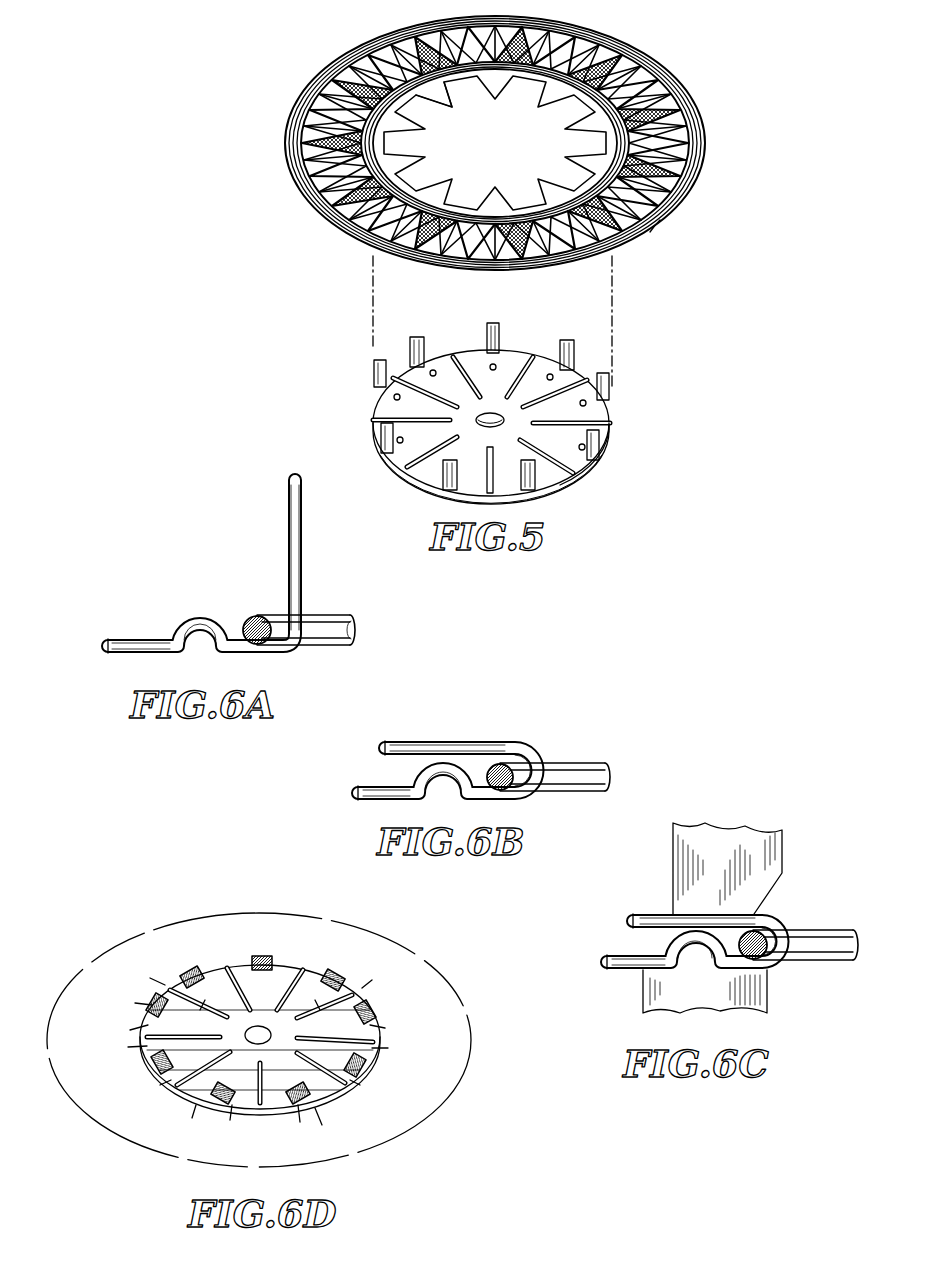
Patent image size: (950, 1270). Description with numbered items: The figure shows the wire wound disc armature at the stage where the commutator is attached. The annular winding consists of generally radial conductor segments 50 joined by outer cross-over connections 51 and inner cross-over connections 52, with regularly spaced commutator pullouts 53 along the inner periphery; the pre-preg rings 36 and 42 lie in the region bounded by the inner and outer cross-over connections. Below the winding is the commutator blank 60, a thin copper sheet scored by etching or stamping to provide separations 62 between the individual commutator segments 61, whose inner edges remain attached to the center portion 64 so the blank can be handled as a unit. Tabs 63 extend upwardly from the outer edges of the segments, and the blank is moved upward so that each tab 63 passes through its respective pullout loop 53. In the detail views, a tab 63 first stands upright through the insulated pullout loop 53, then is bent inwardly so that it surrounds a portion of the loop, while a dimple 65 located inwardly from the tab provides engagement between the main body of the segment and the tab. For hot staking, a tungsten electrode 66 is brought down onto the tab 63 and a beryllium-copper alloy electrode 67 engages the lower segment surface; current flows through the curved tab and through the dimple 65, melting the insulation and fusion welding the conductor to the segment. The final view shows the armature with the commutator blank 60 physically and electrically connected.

In FIG. 5, the pre-preg ring 36 is at (650, 238).
In FIG. 5, the pre-preg ring 42 is at (687, 147).
In FIG. 5, the radial conductor segments 50 is at (643, 90).
In FIG. 5, the outer cross-over connections 51 is at (697, 122).
In FIG. 5, the inner cross-over connections 52 is at (612, 150).
In FIG. 5, the commutator pullouts 53 is at (422, 132).
In FIG. 6A, the commutator pullouts 53 is at (327, 626).
In FIG. 6B, the commutator pullouts 53 is at (587, 771).
In FIG. 6C, the commutator pullouts 53 is at (832, 939).
In FIG. 6D, the commutator pullouts 53 is at (323, 977).
In FIG. 5, the commutator blank 60 is at (622, 427).
In FIG. 5, the commutator segments 61 is at (570, 481).
In FIG. 6A, the commutator segments 61 is at (108, 641).
In FIG. 6B, the commutator segments 61 is at (358, 786).
In FIG. 6C, the commutator segments 61 is at (607, 958).
In FIG. 6D, the commutator segments 61 is at (377, 1058).
In FIG. 5, the separations 62 is at (488, 483).
In FIG. 5, the tabs 63 is at (383, 447).
In FIG. 6A, the tabs 63 is at (290, 574).
In FIG. 6B, the tabs 63 is at (457, 745).
In FIG. 6C, the tabs 63 is at (648, 918).
In FIG. 6D, the tabs 63 is at (373, 998).
In FIG. 5, the center portion 64 is at (497, 403).
In FIG. 6D, the center portion 64 is at (266, 1022).
In FIG. 5, the dimple 65 is at (553, 376).
In FIG. 6A, the dimple 65 is at (196, 632).
In FIG. 6B, the dimple 65 is at (443, 782).
In FIG. 6C, the dimple 65 is at (672, 943).
In FIG. 6C, the tungsten electrode 66 is at (716, 859).
In FIG. 6C, the beryllium-copper alloy electrode 67 is at (765, 1013).